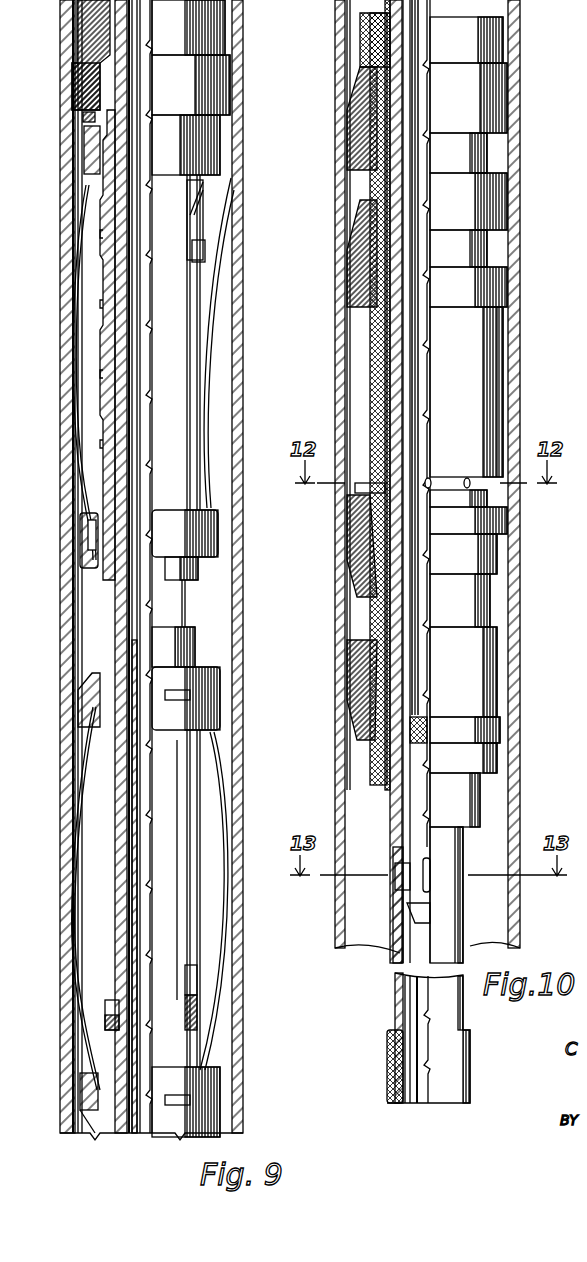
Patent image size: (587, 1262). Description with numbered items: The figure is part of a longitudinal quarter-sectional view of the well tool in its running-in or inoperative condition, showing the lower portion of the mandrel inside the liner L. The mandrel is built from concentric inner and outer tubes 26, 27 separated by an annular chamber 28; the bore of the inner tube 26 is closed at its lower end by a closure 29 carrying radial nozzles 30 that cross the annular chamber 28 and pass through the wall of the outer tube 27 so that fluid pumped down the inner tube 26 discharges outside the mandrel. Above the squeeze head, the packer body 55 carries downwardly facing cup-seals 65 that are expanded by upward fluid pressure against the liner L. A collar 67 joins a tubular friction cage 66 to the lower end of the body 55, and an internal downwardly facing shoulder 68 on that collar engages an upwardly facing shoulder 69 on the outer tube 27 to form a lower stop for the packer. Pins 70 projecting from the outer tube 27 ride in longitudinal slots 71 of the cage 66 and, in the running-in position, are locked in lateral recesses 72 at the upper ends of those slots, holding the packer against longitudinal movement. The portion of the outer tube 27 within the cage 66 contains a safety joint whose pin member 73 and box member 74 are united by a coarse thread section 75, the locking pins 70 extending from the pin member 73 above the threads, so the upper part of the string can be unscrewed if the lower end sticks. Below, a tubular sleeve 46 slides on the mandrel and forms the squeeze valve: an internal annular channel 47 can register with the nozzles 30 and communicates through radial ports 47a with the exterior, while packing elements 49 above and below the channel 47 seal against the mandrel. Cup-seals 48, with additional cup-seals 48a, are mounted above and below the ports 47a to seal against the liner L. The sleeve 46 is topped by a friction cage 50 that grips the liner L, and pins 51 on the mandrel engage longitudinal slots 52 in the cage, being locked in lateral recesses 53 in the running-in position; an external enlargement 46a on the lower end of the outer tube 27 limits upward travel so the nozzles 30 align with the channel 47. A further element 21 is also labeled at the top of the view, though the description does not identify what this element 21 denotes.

In FIG. 9, the liner L is at (238, 231).
In FIG. 10, the liner L is at (513, 197).
In FIG. 10, the mandrel 21 is at (400, 3).
In FIG. 9, the inner tube 26 is at (130, 590).
In FIG. 10, the inner tube 26 is at (412, 32).
In FIG. 9, the outer tube 27 is at (113, 603).
In FIG. 10, the outer tube 27 is at (393, 1000).
In FIG. 9, the annular chamber 28 is at (123, 618).
In FIG. 10, the annular chamber 28 is at (407, 48).
In FIG. 10, the closure 29 is at (460, 913).
In FIG. 10, the radial nozzles 30 is at (400, 878).
In FIG. 10, the tubular sleeve 46 is at (360, 345).
In FIG. 10, the external enlargement 46a is at (387, 1057).
In FIG. 10, the internal annular channel 47 is at (343, 520).
In FIG. 10, the radial ports 47a is at (362, 487).
In FIG. 10, the cup-seals 48 is at (347, 283).
In FIG. 10, the additional cup-seals 48a is at (347, 143).
In FIG. 10, the annular packing elements 49 is at (387, 410).
In FIG. 9, the friction cage 50 is at (197, 922).
In FIG. 9, the pins 51 is at (193, 1017).
In FIG. 9, the longitudinal slots 52 is at (177, 937).
In FIG. 9, the lateral locking recesses 53 is at (193, 988).
In FIG. 9, the body 55 is at (80, 38).
In FIG. 9, the cup-seals 65 is at (70, 85).
In FIG. 9, the tubular friction cage 66 is at (207, 300).
In FIG. 9, the collar 67 is at (95, 113).
In FIG. 9, the internal downwardly facing shoulder 68 is at (110, 115).
In FIG. 9, the upwardly facing annular shoulder 69 is at (97, 166).
In FIG. 9, the pins 70 is at (103, 210).
In FIG. 9, the longitudinal slots 71 is at (182, 325).
In FIG. 9, the lateral locking recesses 72 is at (200, 250).
In FIG. 9, the pin member 73 is at (117, 273).
In FIG. 9, the box member 74 is at (107, 492).
In FIG. 9, the coarse thread section 75 is at (107, 395).